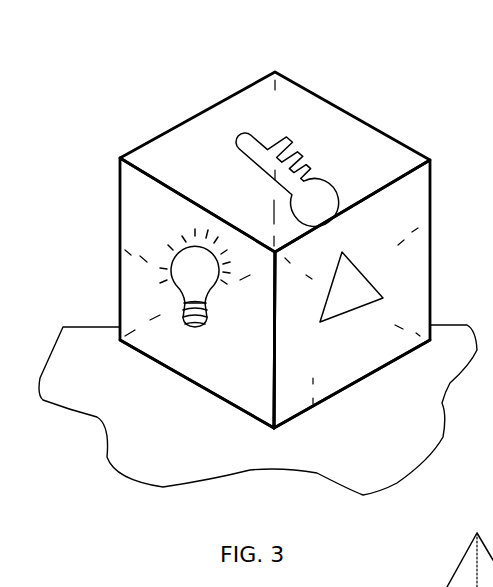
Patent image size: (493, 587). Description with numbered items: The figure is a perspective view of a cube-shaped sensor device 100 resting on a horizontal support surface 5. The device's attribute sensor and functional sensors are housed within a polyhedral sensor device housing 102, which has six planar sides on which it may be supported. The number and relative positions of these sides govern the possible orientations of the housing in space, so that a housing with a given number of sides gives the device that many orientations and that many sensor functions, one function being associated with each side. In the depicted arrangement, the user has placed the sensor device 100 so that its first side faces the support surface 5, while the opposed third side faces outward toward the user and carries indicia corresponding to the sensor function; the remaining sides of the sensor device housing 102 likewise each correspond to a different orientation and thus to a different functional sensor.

The sensor device 100 is at (165, 73).
The sensor device housing 102 is at (393, 157).
The support surface 5 is at (120, 425).